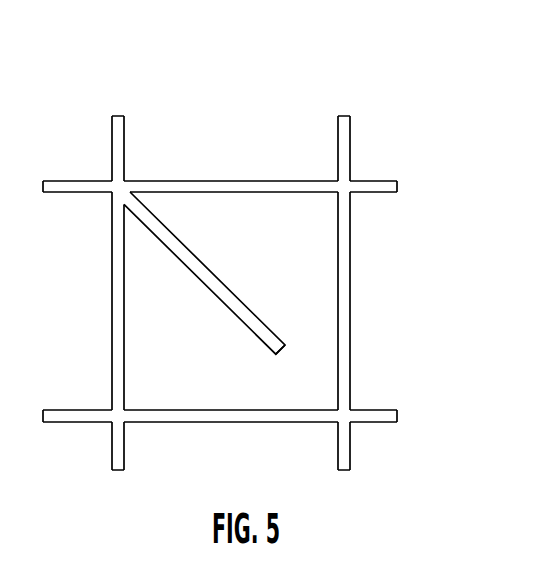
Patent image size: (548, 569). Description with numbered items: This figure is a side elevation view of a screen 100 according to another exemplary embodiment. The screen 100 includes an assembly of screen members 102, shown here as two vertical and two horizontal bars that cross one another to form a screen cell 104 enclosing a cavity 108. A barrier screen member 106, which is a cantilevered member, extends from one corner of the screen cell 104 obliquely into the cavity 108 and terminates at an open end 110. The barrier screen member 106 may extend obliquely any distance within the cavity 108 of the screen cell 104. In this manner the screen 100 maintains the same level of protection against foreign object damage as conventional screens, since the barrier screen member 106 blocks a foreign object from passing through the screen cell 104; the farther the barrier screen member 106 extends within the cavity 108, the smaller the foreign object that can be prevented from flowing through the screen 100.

The screen 100 is at (438, 82).
The screen member 102 is at (112, 134).
The screen cell 104 is at (235, 128).
The barrier screen member 106 is at (200, 260).
The cavity 108 is at (284, 405).
The open end 110 is at (257, 335).